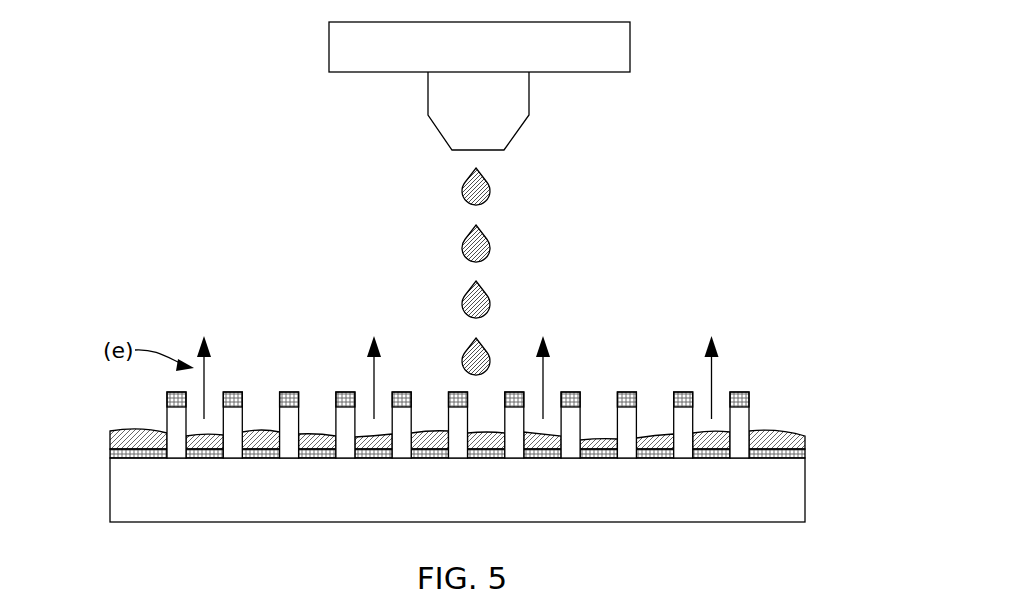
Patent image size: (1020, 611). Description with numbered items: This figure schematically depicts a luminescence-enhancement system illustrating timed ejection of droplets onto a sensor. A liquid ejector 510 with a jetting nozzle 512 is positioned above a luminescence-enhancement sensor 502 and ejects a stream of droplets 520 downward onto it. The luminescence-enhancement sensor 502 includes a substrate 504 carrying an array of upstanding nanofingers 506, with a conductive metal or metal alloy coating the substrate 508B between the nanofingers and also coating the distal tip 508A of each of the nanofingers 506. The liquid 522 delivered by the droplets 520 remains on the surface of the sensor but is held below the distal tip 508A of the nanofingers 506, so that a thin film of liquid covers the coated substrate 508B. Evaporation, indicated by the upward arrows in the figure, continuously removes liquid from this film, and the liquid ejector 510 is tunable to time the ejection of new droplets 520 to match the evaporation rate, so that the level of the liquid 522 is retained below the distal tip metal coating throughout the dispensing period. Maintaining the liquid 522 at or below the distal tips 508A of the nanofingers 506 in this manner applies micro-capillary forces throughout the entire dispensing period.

The luminescence-enhancement sensor 502 is at (461, 436).
The substrate 504 is at (457, 490).
The nanofingers 506 is at (743, 418).
The distal tip of the nanofingers 508A is at (232, 401).
The conductive metal or metal alloy coating the substrate 508B is at (806, 451).
The liquid ejector 510 is at (479, 47).
The jetting nozzle 512 is at (478, 111).
The droplets 520 is at (468, 245).
The liquid 522 is at (140, 435).